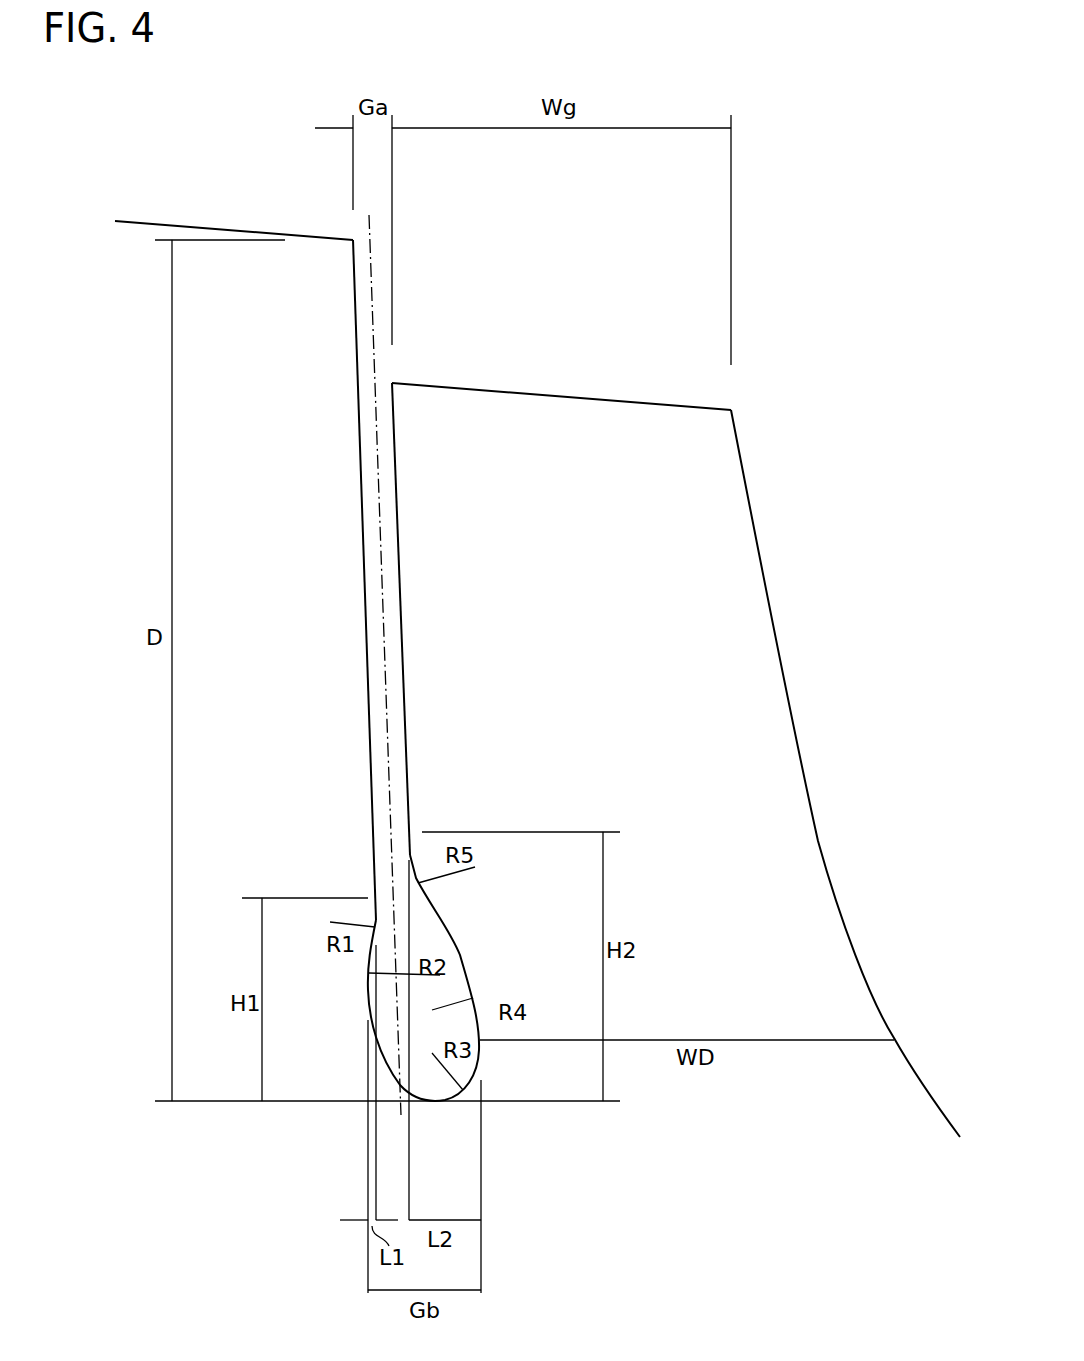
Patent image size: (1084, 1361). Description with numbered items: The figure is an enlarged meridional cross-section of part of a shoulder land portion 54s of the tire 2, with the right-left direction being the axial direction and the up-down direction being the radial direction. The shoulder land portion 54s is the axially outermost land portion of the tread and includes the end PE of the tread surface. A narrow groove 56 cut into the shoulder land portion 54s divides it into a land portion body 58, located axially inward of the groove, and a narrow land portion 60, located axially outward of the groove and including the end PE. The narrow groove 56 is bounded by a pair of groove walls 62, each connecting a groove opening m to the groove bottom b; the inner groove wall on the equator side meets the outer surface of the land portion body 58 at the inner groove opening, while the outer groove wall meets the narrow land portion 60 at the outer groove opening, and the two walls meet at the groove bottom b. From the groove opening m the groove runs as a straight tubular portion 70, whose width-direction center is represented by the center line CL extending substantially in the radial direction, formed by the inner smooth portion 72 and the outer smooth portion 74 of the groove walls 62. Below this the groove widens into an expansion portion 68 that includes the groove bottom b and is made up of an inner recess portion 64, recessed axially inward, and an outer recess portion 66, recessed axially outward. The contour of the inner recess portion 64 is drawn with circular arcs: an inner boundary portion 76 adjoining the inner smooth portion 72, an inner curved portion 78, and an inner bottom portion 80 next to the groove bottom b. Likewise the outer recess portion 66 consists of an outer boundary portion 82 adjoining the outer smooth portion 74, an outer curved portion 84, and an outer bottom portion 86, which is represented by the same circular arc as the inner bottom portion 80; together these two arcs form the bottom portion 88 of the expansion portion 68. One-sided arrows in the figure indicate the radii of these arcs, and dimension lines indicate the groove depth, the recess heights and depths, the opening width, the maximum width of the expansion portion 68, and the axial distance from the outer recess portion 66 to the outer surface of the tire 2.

The tire 2 is at (826, 222).
The shoulder land portion 54s is at (556, 255).
The narrow groove 56 is at (361, 312).
The land portion body 58 is at (148, 221).
The narrow land portion 60 is at (633, 396).
The groove wall 62 is at (456, 605).
The inner recess portion 64 is at (393, 1058).
The outer recess portion 66 is at (480, 1030).
The expansion portion 68 is at (461, 952).
The tubular portion 70 is at (362, 503).
The inner smooth portion 72 is at (366, 453).
The outer smooth portion 74 is at (395, 463).
The inner boundary portion 76 is at (374, 921).
The inner curved portion 78 is at (368, 993).
The inner bottom portion 80 is at (436, 1100).
The outer boundary portion 82 is at (440, 921).
The outer curved portion 84 is at (471, 994).
The outer bottom portion 86 is at (478, 1079).
The bottom portion 88 is at (478, 1086).
The end of tread surface PE is at (733, 409).
The center line CL is at (385, 530).
The groove opening m is at (352, 238).
The groove bottom b is at (453, 1102).